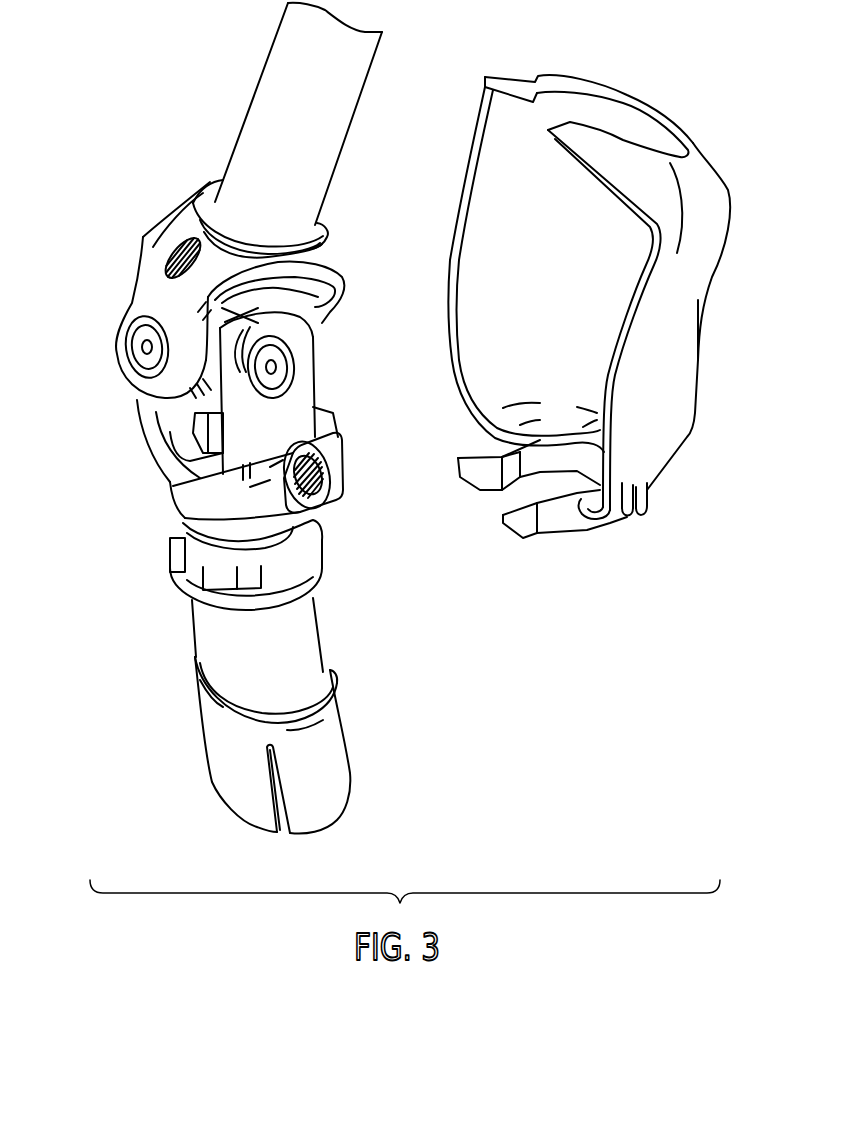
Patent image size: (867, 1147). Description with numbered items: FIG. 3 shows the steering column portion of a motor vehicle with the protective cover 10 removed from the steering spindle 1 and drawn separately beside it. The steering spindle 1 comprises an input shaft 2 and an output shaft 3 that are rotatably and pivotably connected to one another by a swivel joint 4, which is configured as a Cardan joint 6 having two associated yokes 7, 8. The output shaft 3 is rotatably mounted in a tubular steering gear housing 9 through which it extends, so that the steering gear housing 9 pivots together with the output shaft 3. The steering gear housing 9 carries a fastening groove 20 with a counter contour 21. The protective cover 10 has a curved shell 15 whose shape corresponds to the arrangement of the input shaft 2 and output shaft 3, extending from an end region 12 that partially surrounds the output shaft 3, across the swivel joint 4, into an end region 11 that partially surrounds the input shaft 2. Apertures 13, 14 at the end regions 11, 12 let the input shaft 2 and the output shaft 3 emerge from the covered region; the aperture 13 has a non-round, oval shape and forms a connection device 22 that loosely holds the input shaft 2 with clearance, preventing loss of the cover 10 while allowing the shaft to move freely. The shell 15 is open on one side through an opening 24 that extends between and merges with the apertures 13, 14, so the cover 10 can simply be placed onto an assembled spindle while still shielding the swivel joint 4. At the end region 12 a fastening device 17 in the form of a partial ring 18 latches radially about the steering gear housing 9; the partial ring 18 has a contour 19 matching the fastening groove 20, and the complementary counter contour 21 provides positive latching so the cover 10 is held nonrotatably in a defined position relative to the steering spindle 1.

The steering spindle 1 is at (225, 142).
The input shaft 2 is at (263, 97).
The output shaft 3 is at (262, 543).
The swivel joint 4 is at (113, 375).
The Cardan joint 6 is at (147, 346).
The yoke 7 is at (140, 287).
The yoke 8 is at (173, 486).
The steering gear housing 9 is at (217, 633).
The protective cover 10 is at (735, 253).
The end region 11 is at (710, 193).
The end region 12 is at (630, 506).
The aperture 13 is at (620, 125).
The aperture 14 is at (548, 489).
The shell 15 is at (677, 325).
The fastening device 17 is at (553, 527).
The partial ring 18 is at (565, 514).
The contour 19 is at (512, 467).
The fastening groove 20 is at (197, 568).
The counter contour 21 is at (255, 585).
The connection device 22 is at (590, 142).
The opening 24 is at (513, 206).